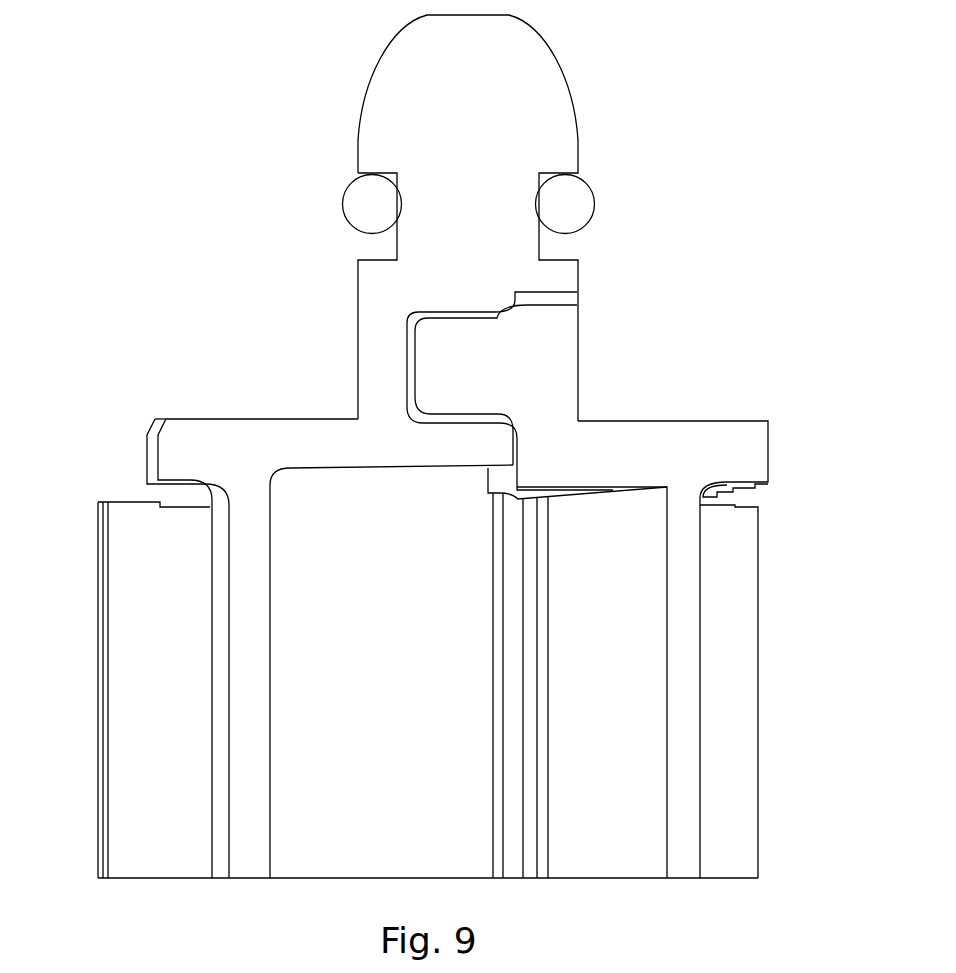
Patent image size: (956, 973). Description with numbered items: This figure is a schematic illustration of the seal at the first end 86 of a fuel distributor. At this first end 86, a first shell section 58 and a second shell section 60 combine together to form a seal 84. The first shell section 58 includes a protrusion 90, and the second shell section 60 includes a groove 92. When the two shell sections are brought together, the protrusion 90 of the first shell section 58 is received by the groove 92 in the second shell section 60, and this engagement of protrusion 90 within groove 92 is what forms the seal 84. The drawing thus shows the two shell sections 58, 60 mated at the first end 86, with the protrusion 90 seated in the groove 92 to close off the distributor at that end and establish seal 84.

The first end 86 is at (684, 159).
The seal 84 is at (408, 337).
The groove 92 is at (410, 398).
The protrusion 90 is at (443, 352).
The second shell section 60 is at (177, 425).
The first shell section 58 is at (687, 430).